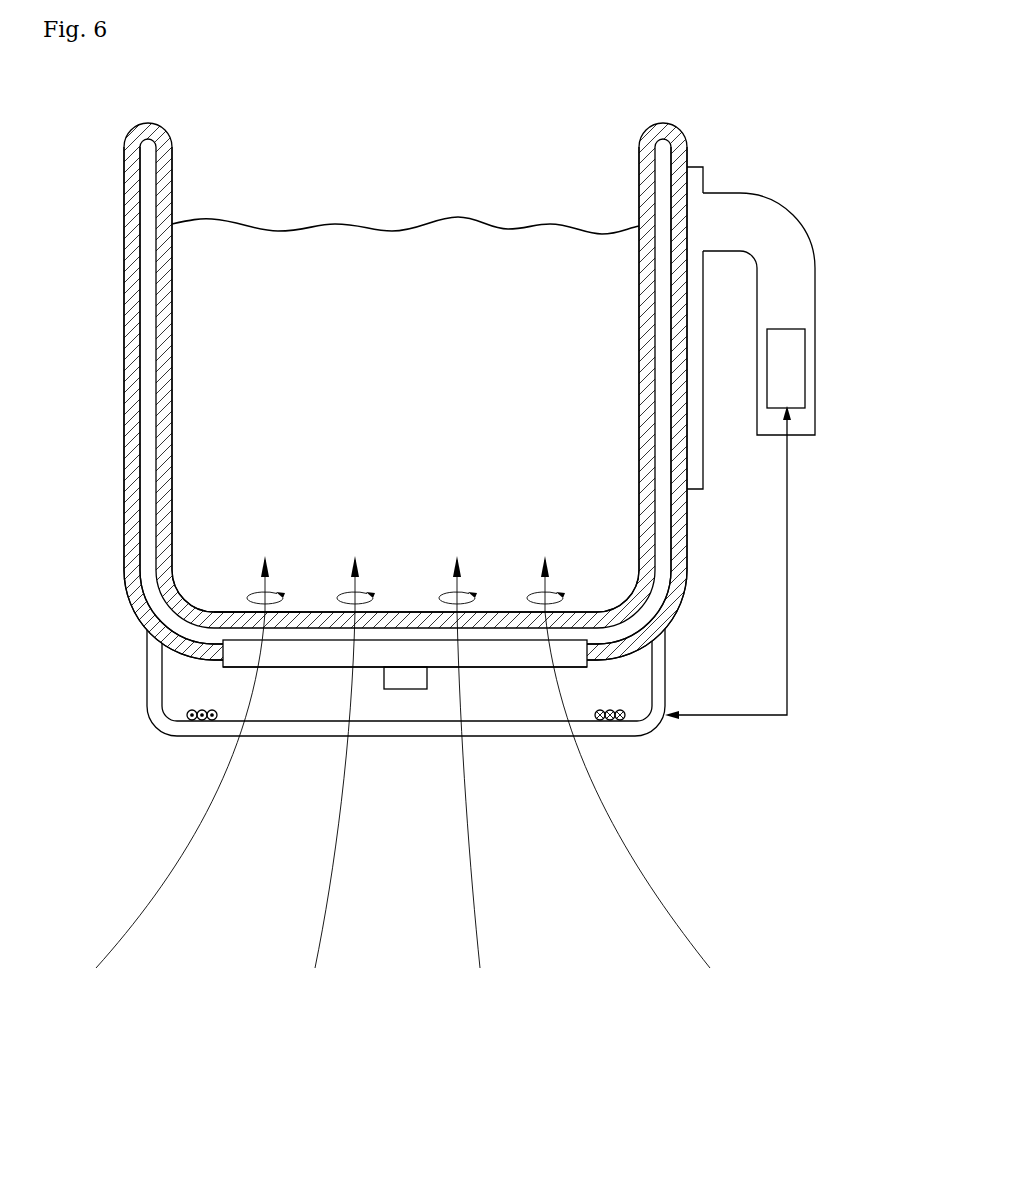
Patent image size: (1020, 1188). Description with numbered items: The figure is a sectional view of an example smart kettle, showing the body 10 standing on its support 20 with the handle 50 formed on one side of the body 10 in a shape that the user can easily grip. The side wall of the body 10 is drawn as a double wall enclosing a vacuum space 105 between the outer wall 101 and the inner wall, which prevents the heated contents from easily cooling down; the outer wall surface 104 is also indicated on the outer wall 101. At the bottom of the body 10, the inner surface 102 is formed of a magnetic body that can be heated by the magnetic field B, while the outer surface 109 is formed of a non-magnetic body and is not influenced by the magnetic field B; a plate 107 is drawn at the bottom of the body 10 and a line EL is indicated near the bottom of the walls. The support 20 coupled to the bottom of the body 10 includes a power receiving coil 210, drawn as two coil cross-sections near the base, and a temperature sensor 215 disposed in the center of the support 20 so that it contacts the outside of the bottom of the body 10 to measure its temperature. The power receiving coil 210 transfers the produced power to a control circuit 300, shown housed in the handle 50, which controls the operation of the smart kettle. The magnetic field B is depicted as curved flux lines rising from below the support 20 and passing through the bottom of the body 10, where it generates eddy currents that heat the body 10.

The body 10 is at (363, 358).
The handle 50 is at (774, 404).
The outer wall 101 is at (133, 337).
The inner surface of the bottom of the body 102 is at (172, 417).
The outer surface of outer wall 104 is at (124, 487).
The vacuum space 105 is at (148, 411).
The heating plate 107 is at (275, 660).
The outer surface of the bottom of the body 109 is at (515, 668).
The support 20 is at (377, 719).
The power receiving coil 210 is at (190, 722).
The temperature sensor 215 is at (405, 681).
The control circuit 300 is at (793, 373).
The electrode line EL is at (207, 617).
The magnetic field B is at (150, 912).